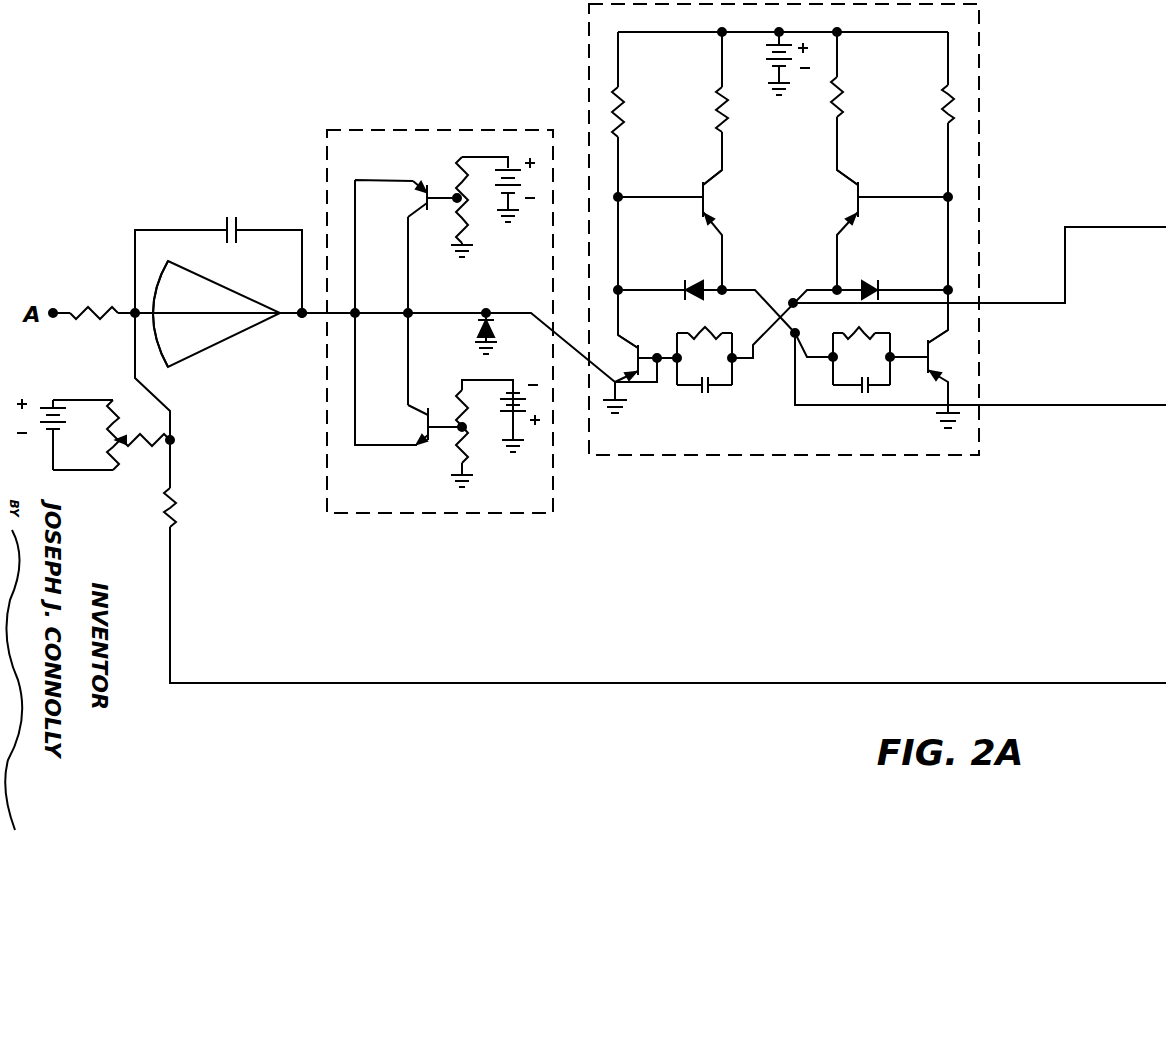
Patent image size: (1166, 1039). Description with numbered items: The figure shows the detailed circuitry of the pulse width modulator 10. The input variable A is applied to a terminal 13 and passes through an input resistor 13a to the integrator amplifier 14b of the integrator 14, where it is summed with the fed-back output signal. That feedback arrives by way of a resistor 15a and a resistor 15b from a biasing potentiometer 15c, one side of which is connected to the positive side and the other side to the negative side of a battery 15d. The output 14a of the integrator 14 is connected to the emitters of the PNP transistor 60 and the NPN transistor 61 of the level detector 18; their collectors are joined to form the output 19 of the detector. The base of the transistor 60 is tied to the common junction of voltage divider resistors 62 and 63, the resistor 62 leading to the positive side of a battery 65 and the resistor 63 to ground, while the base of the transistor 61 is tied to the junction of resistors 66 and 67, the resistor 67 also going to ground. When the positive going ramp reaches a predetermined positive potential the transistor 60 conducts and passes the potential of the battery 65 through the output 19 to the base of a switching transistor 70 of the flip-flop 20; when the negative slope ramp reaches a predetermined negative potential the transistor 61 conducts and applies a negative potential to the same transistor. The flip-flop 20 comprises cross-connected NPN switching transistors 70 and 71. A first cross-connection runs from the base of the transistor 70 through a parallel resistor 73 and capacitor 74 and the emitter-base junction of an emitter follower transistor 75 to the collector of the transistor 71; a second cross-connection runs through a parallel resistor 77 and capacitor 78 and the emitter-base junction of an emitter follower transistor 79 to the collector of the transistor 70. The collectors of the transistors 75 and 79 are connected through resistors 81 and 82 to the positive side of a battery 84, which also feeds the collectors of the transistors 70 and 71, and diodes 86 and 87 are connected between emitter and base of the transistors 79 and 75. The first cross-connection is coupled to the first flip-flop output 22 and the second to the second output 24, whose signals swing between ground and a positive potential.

The pulse width modulator 10 is at (791, 571).
The terminal 13 is at (58, 308).
The input resistor 13a is at (92, 338).
The integrator 14 is at (276, 276).
The output of integrator 14a is at (318, 312).
The integrator amplifier 14b is at (200, 352).
The resistor 15a is at (177, 503).
The resistor 15b is at (157, 445).
The biasing potentiometer 15c is at (86, 435).
The battery 15d is at (58, 394).
The level detector 18 is at (348, 501).
The output of detector 19 is at (531, 313).
The flip-flop 20 is at (796, 445).
The first flip-flop output 22 is at (1118, 227).
The second output 24 is at (1132, 378).
The transistor 60 is at (428, 188).
The transistor 61 is at (432, 410).
The voltage divider resistor 62 is at (467, 168).
The voltage divider resistor 63 is at (466, 228).
The battery 65 is at (515, 195).
The resistor 66 is at (470, 395).
The resistor 67 is at (457, 448).
The switching transistor 70 is at (643, 343).
The switching transistor 71 is at (928, 345).
The resistor 73 is at (713, 333).
The capacitor 74 is at (713, 392).
The emitter follower transistor 75 is at (872, 182).
The resistor 77 is at (852, 328).
The capacitor 78 is at (875, 387).
The emitter follower transistor 79 is at (703, 187).
The resistor 81 is at (850, 90).
The resistor 82 is at (717, 105).
The battery 84 is at (770, 67).
The diode 86 is at (700, 283).
The diode 87 is at (878, 283).